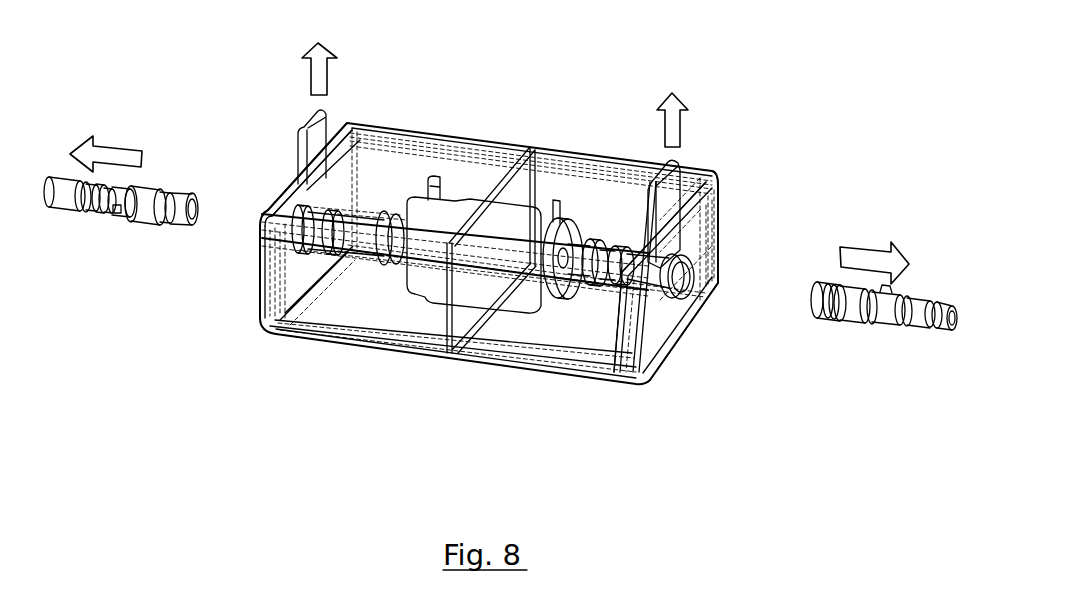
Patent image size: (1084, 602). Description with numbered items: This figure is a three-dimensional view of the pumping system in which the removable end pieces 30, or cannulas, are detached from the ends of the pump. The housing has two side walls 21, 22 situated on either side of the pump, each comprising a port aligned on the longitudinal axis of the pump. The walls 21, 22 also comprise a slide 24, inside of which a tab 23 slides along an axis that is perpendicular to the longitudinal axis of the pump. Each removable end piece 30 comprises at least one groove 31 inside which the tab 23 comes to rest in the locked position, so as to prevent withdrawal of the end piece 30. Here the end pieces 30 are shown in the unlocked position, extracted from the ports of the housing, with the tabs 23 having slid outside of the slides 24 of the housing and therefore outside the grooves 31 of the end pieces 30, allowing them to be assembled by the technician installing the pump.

The side wall 21 is at (647, 383).
The side wall 22 is at (258, 300).
The tab 23 is at (306, 131).
The slide 24 is at (680, 233).
The removable end piece 30 is at (65, 195).
The groove 31 is at (868, 323).